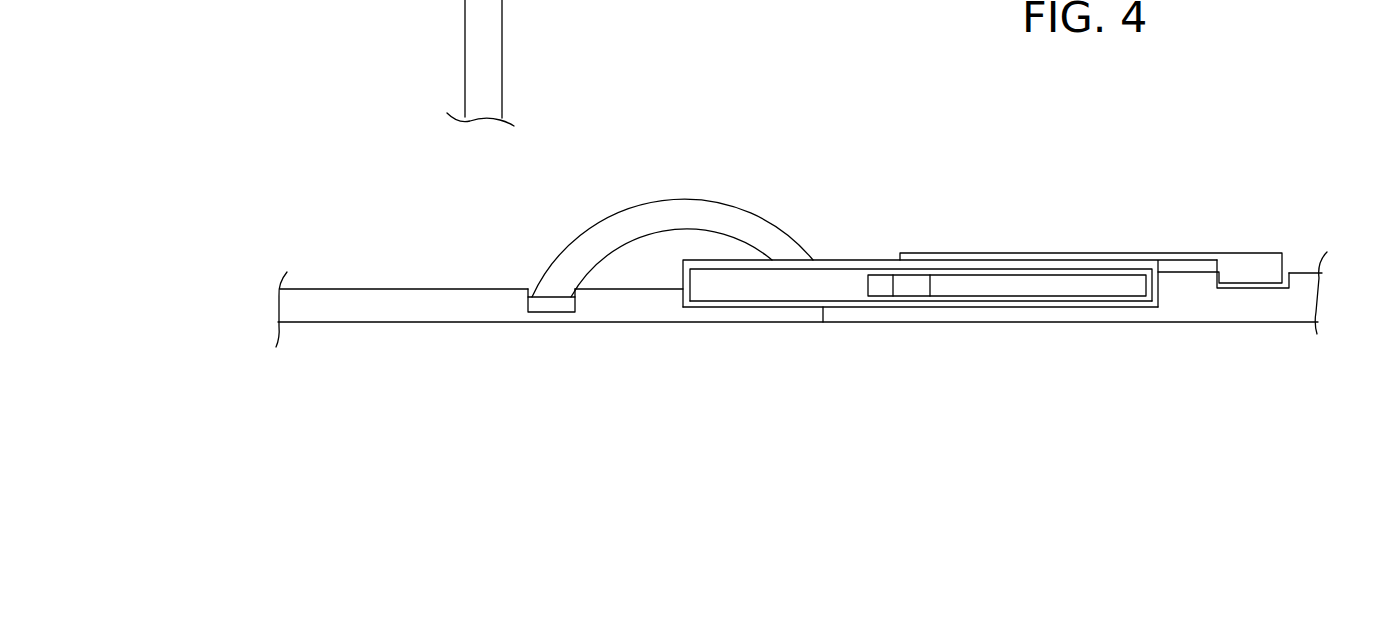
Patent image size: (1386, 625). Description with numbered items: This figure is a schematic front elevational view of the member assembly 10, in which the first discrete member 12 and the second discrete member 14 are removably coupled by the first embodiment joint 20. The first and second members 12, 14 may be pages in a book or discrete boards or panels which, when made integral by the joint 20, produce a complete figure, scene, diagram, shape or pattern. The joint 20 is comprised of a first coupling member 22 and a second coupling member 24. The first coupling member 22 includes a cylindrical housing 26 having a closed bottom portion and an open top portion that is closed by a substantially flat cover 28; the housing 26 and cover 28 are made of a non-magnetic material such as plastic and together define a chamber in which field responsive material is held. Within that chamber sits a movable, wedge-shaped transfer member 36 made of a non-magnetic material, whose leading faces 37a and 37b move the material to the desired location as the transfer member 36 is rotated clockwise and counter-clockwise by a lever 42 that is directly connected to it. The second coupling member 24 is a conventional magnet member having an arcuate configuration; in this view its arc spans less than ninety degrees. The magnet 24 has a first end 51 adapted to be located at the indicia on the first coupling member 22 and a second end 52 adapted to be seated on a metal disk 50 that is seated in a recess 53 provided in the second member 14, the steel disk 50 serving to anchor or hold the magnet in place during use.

The member assembly 10 is at (1164, 141).
The first discrete member 12 is at (1134, 314).
The second discrete member 14 is at (499, 0).
The first embodiment joint 20 is at (644, 349).
The first coupling member 22 is at (970, 344).
The second coupling member 24 is at (664, 182).
The cylindrical housing 26 is at (795, 303).
The cover 28 is at (842, 265).
The transfer member 36 is at (883, 276).
The leading face 37a is at (1010, 285).
The leading face 37b is at (881, 297).
The lever 42 is at (1188, 253).
The metal disk 50 is at (540, 310).
The first end 51 is at (795, 252).
The second end 52 is at (592, 238).
The recess 53 is at (526, 283).